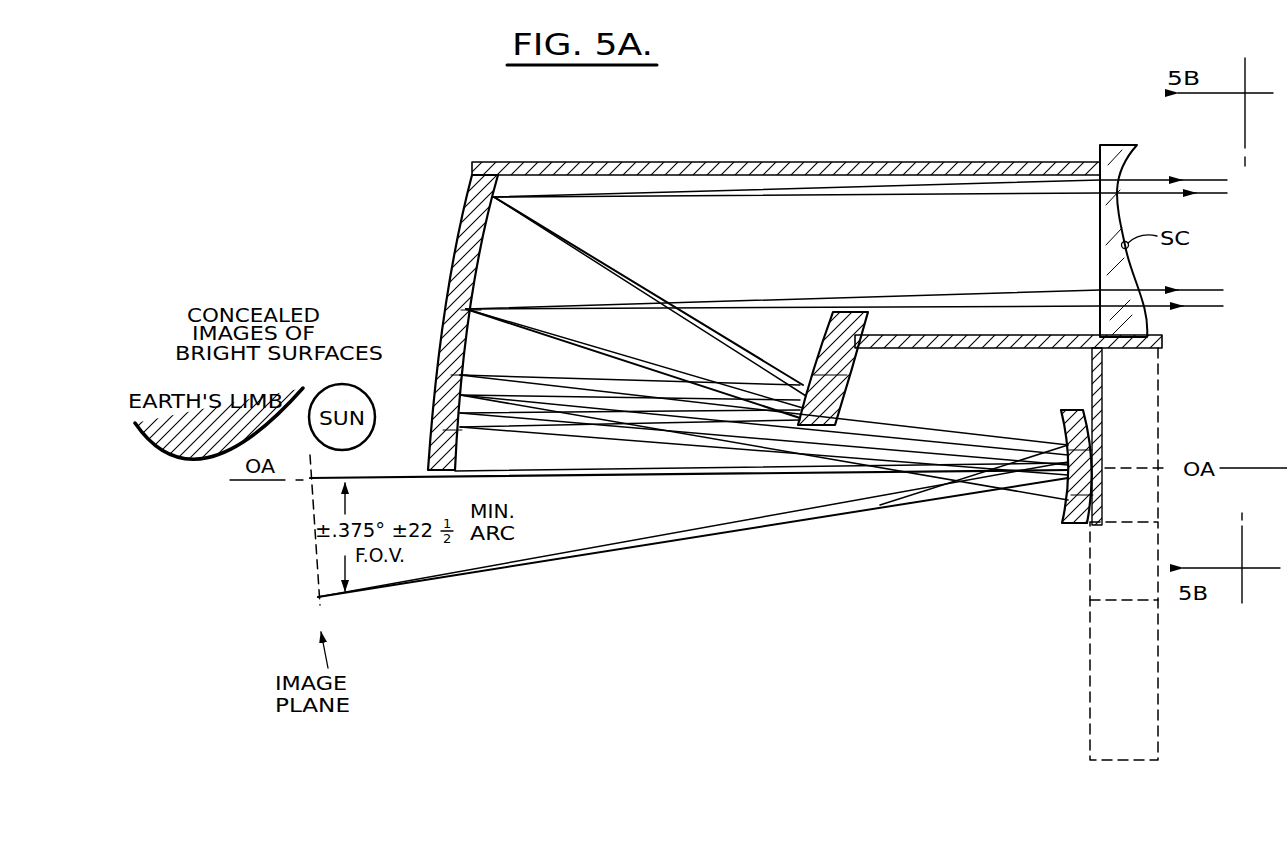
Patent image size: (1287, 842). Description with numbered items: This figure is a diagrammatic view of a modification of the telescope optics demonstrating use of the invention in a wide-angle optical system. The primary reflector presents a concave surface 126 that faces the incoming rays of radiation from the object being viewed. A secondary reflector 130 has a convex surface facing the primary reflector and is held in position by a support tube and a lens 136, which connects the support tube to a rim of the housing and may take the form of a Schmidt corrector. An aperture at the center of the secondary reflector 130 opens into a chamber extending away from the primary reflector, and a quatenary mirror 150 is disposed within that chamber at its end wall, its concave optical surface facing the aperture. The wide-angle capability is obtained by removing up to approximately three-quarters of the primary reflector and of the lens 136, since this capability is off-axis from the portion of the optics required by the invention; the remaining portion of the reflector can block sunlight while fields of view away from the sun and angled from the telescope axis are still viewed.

The concave surface 126 is at (482, 255).
The secondary reflector 130 is at (840, 390).
The quatenary mirror 150 is at (1067, 410).
The lens 136 is at (1111, 143).